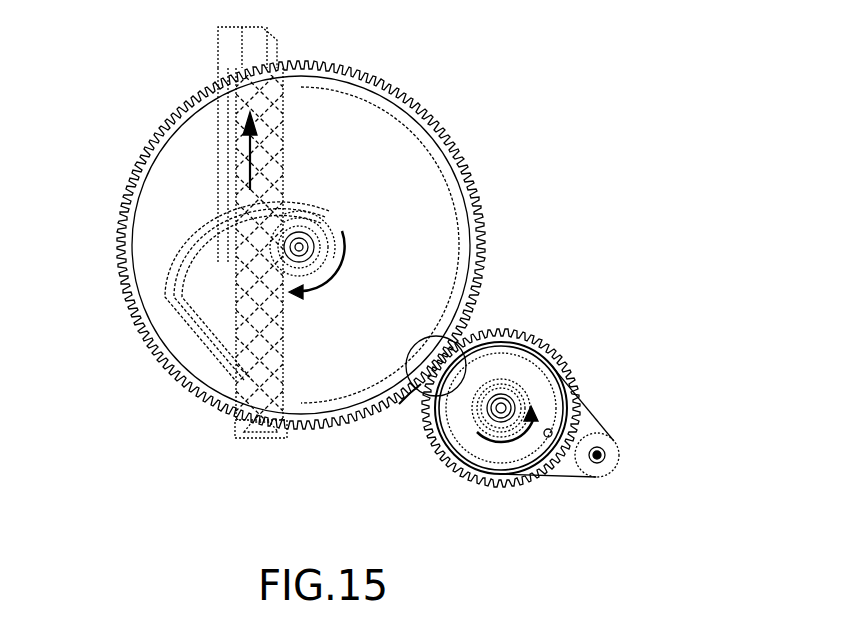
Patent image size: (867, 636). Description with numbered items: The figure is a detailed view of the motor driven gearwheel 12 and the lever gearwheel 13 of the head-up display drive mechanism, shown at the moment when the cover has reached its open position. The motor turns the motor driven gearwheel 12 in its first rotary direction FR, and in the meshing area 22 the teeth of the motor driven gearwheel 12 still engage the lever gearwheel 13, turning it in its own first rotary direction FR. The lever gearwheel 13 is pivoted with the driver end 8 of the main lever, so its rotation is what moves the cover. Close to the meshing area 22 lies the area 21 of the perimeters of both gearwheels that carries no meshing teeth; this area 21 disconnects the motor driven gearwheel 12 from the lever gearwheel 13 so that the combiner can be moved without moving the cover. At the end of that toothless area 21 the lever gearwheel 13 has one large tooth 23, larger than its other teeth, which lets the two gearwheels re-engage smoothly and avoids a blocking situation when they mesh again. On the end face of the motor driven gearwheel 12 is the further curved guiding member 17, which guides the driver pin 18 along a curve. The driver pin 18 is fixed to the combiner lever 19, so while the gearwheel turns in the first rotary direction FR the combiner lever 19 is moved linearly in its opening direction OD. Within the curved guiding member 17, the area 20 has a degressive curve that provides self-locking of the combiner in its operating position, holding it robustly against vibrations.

The driver end 8 is at (600, 455).
The motor driven gearwheel 12 is at (393, 167).
The lever gearwheel 13 is at (548, 372).
The further curved guiding member 17 is at (182, 310).
The driver pin 18 is at (270, 223).
The combiner lever 19 is at (222, 67).
The area 20 is at (226, 389).
The area 21 is at (496, 281).
The area 22 is at (417, 393).
The large tooth 23 is at (460, 341).
The opening direction OD is at (250, 152).
The first rotary direction FR is at (340, 264).